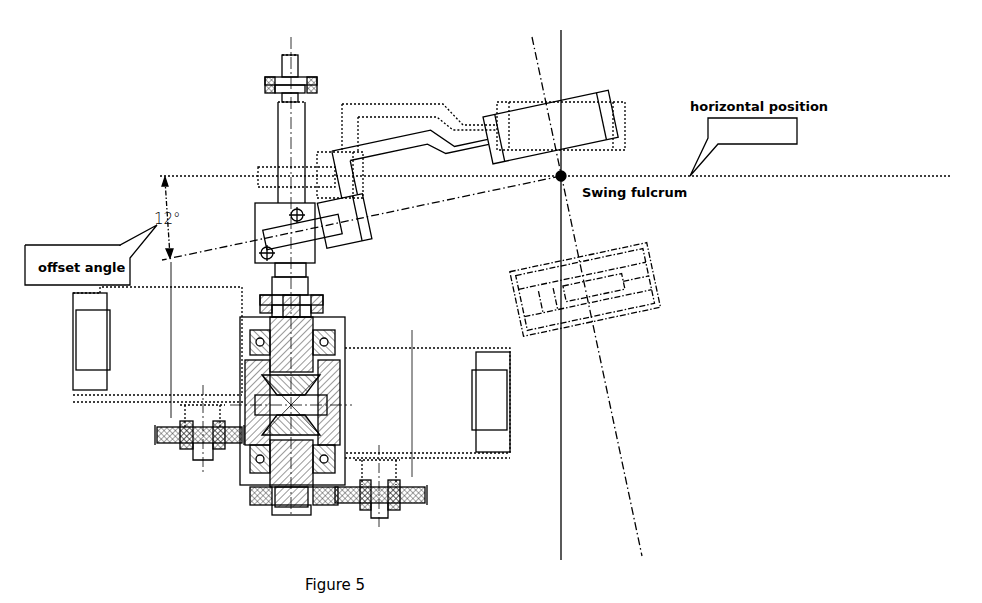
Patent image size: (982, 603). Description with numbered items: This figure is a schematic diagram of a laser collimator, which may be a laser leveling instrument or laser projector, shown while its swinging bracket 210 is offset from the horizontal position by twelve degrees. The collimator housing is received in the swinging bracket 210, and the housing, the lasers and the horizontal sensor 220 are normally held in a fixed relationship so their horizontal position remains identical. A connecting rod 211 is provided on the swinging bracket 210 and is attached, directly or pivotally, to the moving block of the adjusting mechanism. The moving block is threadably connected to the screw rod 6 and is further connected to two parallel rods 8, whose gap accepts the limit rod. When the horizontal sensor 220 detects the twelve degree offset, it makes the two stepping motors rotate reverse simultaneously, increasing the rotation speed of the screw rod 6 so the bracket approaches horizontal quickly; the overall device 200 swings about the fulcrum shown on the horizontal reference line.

The screw rod 6 is at (287, 125).
The parallel rods 8 is at (292, 211).
The swing device 200 is at (628, 295).
The swinging bracket 210 is at (561, 118).
The connecting rod 211 is at (293, 235).
The horizontal sensor 220 is at (610, 290).